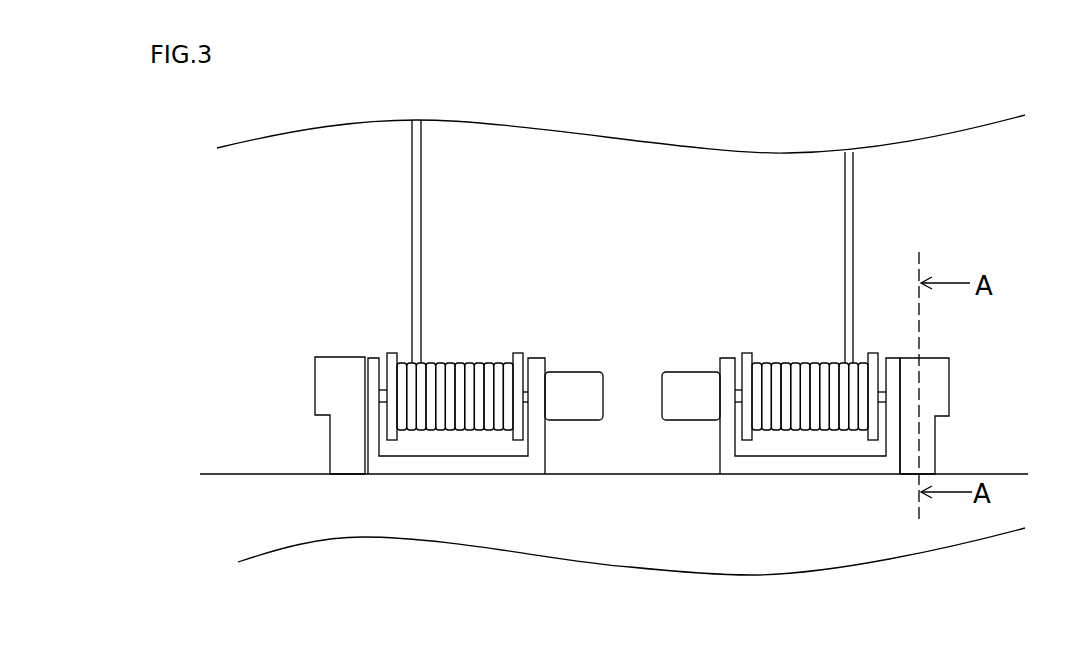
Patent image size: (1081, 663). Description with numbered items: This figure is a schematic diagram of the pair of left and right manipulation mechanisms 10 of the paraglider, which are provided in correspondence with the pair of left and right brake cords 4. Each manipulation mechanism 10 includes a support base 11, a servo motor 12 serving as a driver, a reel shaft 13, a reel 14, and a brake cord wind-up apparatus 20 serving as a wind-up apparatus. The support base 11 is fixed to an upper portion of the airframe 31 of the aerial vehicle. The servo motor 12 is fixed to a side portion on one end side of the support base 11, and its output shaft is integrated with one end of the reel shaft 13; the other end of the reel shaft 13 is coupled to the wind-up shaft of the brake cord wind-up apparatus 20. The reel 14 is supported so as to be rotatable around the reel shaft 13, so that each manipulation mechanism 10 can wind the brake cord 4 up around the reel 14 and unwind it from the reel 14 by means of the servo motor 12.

The brake cord 4 is at (412, 210).
The manipulation mechanism 10 is at (598, 379).
The support base 11 is at (500, 467).
The servo motor 12 is at (575, 385).
The reel shaft 13 is at (525, 352).
The reel 14 is at (450, 363).
The brake cord wind-up apparatus 20 is at (323, 384).
The airframe 31 is at (290, 492).